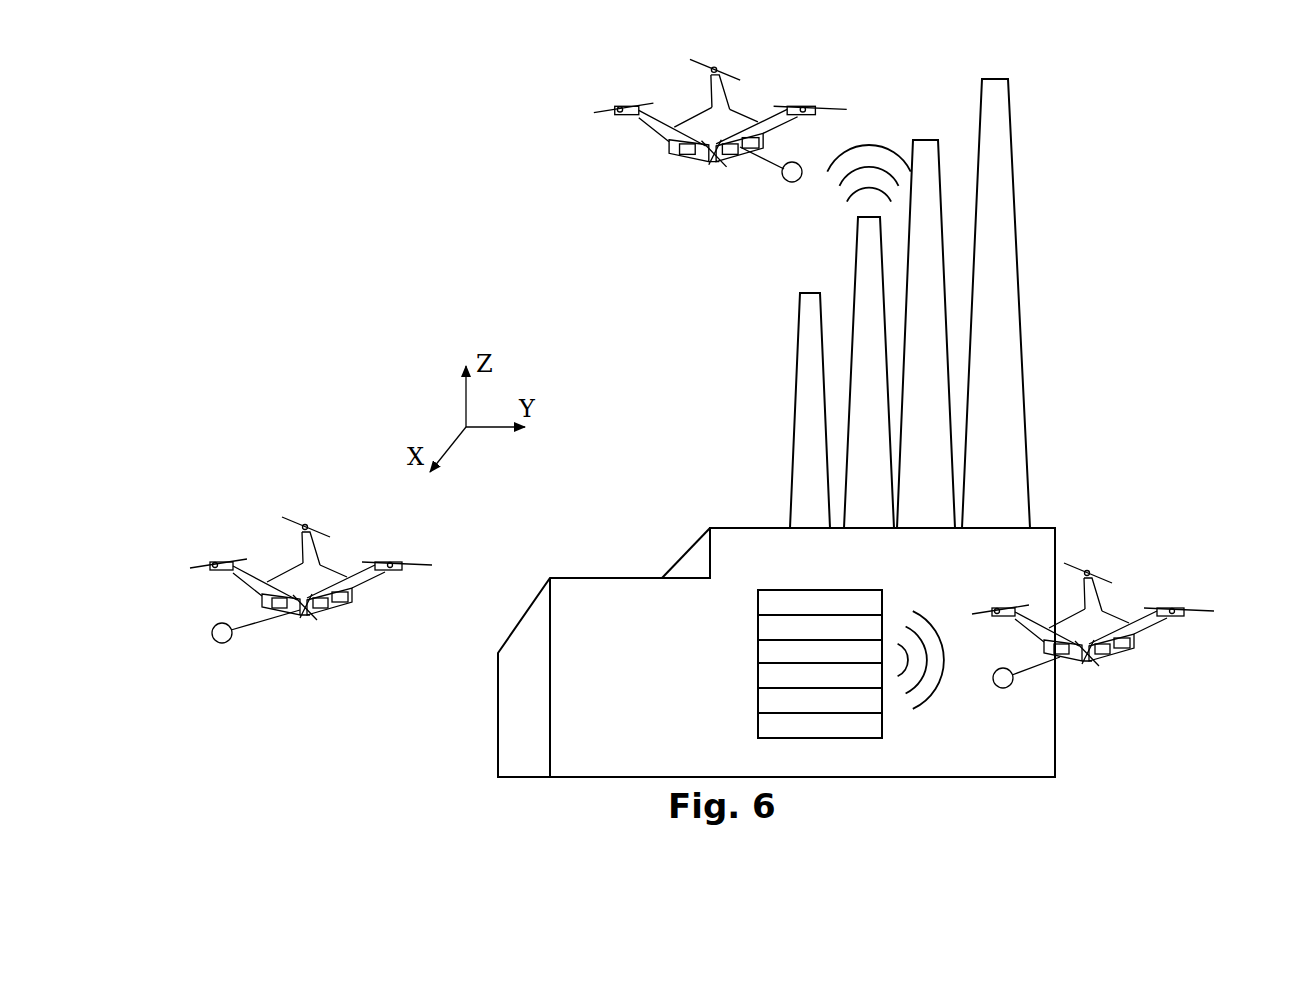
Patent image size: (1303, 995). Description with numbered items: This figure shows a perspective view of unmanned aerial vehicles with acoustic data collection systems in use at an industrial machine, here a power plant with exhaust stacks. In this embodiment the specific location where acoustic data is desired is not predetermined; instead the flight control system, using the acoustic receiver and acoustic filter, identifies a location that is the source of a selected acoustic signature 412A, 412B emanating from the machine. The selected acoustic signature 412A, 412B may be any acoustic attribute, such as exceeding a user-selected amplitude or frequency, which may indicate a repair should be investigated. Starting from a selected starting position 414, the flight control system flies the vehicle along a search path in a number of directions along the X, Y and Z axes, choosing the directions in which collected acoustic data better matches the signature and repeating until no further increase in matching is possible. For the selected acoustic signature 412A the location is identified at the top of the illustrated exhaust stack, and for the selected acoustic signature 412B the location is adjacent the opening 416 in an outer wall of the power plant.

The selected acoustic signature 412A is at (889, 138).
The selected acoustic signature 412B is at (939, 627).
The selected starting position 414 is at (212, 618).
The opening 416 is at (868, 742).